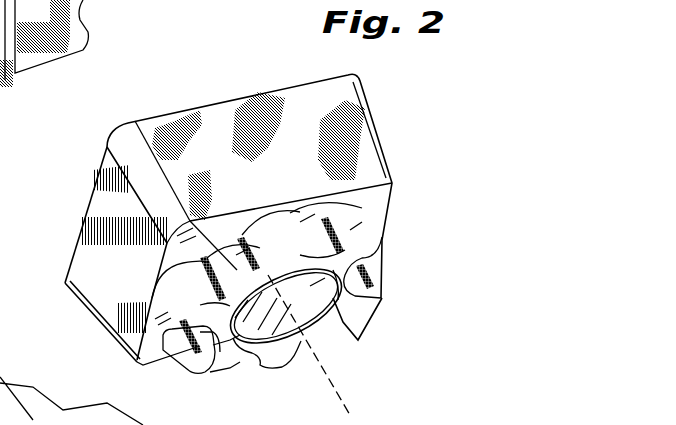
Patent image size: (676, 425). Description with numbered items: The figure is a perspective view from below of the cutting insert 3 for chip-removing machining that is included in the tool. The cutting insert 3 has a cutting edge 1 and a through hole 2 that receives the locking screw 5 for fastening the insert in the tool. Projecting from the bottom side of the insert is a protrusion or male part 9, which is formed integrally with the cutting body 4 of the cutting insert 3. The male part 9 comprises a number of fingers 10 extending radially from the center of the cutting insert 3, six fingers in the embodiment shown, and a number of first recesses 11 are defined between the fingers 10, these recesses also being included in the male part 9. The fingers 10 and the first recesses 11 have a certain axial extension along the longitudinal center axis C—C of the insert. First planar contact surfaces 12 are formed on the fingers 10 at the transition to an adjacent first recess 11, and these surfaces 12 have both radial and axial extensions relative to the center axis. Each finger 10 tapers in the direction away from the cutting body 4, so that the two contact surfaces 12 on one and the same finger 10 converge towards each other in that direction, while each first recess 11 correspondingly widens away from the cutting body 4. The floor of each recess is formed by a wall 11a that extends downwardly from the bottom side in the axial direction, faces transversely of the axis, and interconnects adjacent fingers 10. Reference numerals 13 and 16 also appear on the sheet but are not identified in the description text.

The cutting edge 1 is at (40, 71).
The through hole 2 is at (289, 335).
The cutting insert 3 is at (390, 129).
The cutting body 4 is at (107, 330).
The locking screw 5 is at (4, 392).
The male part 9 is at (388, 282).
The fingers 10 is at (267, 229).
The first recesses 11 is at (190, 221).
The wall 11a is at (373, 297).
The first planar contact surfaces 12 is at (167, 253).
The support surface 13 is at (227, 419).
The clamping screw 16 is at (107, 417).